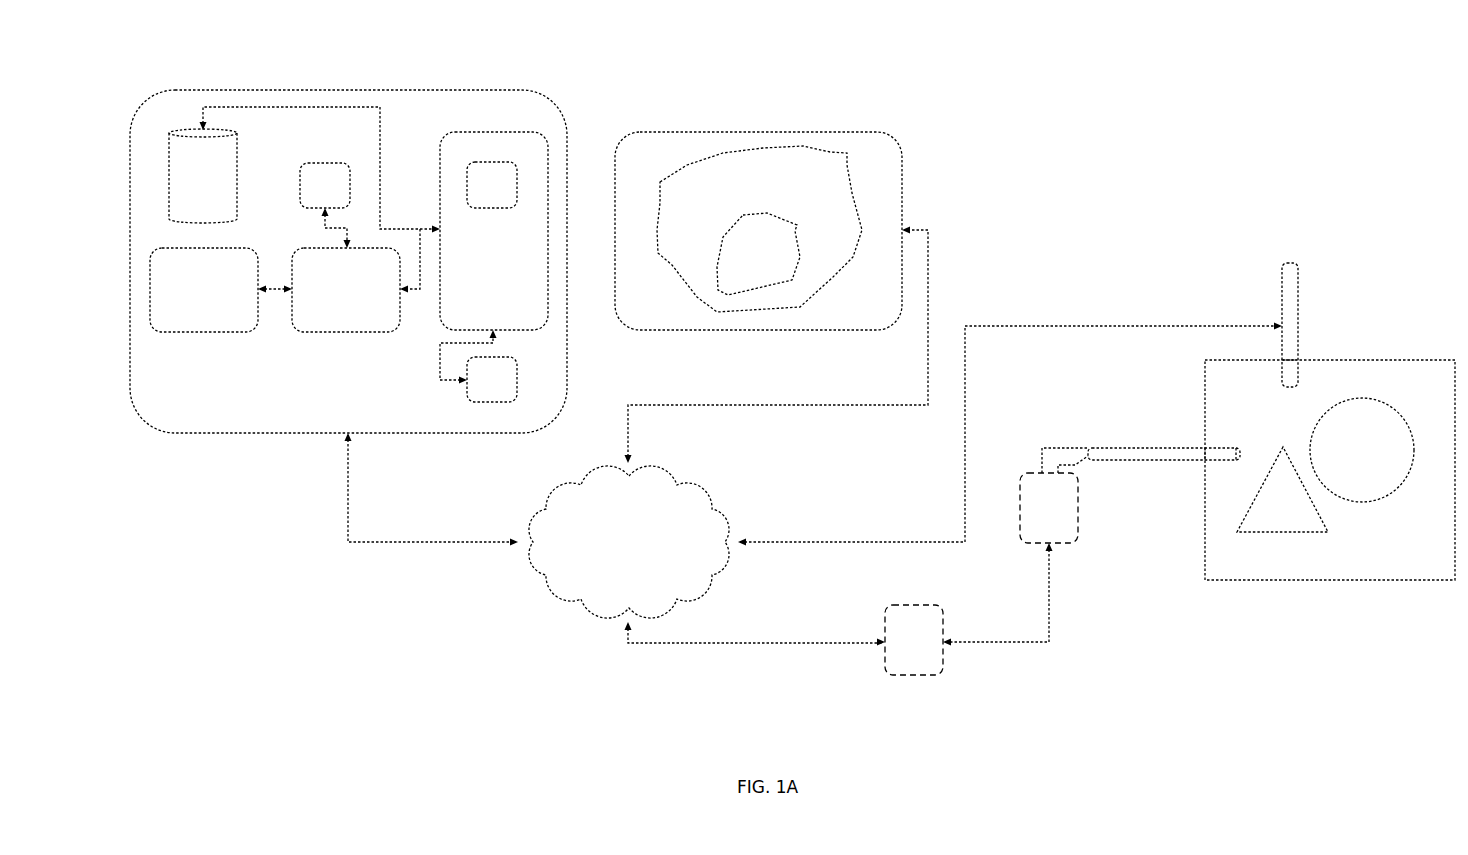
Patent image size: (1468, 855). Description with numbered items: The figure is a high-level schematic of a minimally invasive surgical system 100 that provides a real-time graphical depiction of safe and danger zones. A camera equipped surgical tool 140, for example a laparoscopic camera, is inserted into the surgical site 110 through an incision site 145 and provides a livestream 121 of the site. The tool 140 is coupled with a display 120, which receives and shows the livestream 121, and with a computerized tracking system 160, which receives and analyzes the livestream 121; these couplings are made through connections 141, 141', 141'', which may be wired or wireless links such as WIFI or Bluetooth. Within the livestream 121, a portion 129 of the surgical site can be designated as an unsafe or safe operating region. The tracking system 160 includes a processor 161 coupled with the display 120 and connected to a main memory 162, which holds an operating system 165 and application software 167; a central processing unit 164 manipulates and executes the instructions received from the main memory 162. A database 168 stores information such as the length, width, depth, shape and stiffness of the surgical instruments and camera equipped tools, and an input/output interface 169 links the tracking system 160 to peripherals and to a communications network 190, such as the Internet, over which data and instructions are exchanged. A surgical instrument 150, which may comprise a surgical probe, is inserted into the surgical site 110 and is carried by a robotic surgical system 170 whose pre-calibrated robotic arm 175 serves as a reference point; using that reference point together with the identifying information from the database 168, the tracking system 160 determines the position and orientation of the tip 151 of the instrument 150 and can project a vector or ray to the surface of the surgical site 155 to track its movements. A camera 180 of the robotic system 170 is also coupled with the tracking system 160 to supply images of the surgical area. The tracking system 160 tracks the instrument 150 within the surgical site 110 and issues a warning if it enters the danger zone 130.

The minimally invasive surgical system 100 is at (124, 71).
The surgical site 110 is at (1330, 470).
The display 120 is at (1014, 317).
The livestream 121 is at (759, 229).
The portion of the surgical site 129 is at (758, 254).
The danger zone 130 is at (1282, 489).
The camera equipped surgical tool 140 is at (1300, 292).
The connection 141 is at (1010, 410).
The connection 141' is at (432, 517).
The connection 141'' is at (777, 348).
The incision site 145 is at (1300, 359).
The surgical instrument 150 is at (1123, 461).
The tip 151 is at (1240, 447).
The surface of the surgical site 155 is at (1205, 459).
The computerized tracking system 160 is at (348, 261).
The processor 161 is at (494, 231).
The main memory 162 is at (346, 290).
The central processing unit 164 is at (492, 185).
The operating system 165 is at (204, 290).
The application software 167 is at (325, 185).
The database 168 is at (203, 176).
The input/output interface 169 is at (492, 379).
The robotic surgical system 170 is at (1049, 508).
The robotic arm 175 is at (1058, 447).
The camera 180 is at (914, 640).
The communications network 190 is at (629, 542).